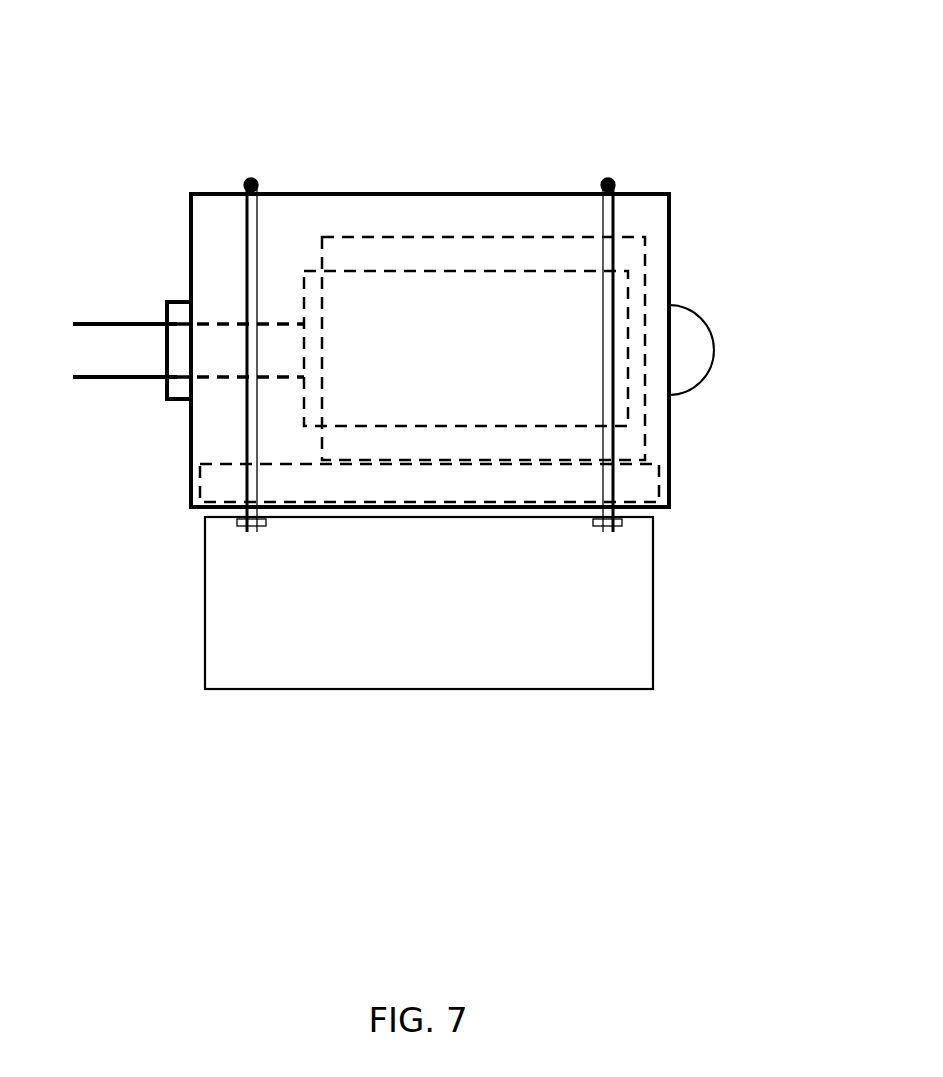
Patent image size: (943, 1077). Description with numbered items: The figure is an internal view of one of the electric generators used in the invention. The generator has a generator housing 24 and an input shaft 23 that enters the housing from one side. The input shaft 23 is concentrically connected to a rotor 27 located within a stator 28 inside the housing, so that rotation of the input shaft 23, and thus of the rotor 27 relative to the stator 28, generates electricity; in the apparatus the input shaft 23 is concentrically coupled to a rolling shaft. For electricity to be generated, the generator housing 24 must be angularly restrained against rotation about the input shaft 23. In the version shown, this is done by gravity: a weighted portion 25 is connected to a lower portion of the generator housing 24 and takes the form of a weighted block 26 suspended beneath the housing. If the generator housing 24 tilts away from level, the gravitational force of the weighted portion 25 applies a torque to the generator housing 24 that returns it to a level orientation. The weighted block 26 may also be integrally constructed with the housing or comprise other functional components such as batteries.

The input shaft 23 is at (213, 348).
The generator housing 24 is at (435, 194).
The weighted portion 25 is at (643, 486).
The weighted block 26 is at (637, 672).
The rotor 27 is at (309, 273).
The stator 28 is at (364, 245).